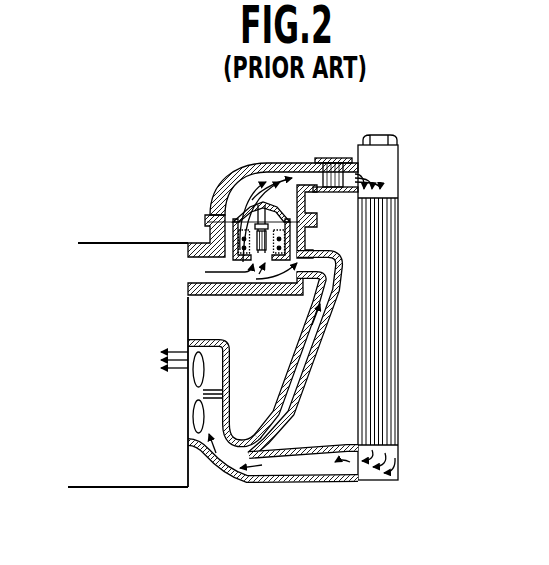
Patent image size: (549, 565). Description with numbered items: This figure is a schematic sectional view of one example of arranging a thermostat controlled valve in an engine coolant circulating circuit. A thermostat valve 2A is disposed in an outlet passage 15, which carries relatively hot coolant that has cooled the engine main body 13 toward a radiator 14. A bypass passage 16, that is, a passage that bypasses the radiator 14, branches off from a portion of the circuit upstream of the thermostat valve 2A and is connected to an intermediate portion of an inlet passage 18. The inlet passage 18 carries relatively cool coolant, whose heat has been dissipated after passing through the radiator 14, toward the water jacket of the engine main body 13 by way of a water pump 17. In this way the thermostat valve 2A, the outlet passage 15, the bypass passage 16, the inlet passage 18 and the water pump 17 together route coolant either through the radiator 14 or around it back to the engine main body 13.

The engine main body 13 is at (143, 489).
The radiator 14 is at (398, 377).
The outlet passage 15 is at (283, 162).
The bypass passage 16 is at (297, 374).
The water pump 17 is at (212, 366).
The inlet passage 18 is at (282, 471).
The thermostat valve 2A is at (235, 211).